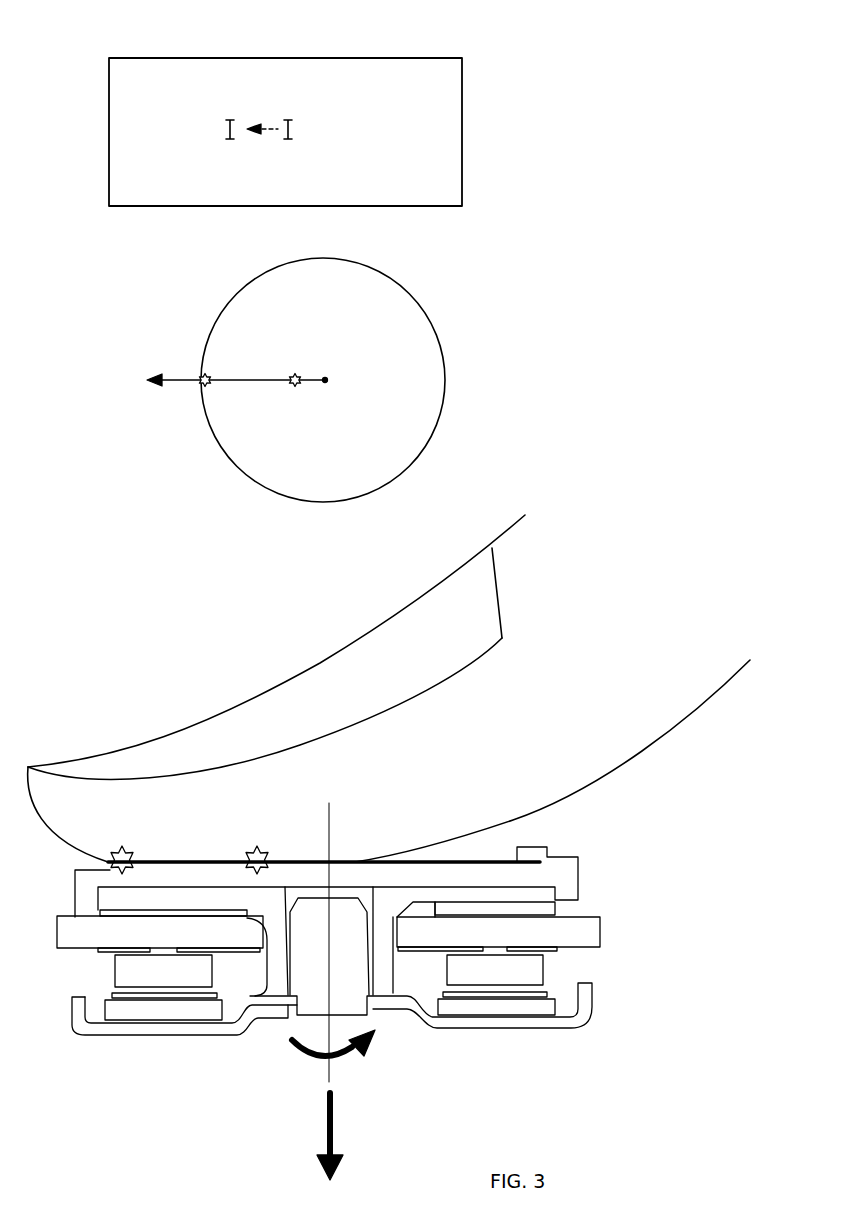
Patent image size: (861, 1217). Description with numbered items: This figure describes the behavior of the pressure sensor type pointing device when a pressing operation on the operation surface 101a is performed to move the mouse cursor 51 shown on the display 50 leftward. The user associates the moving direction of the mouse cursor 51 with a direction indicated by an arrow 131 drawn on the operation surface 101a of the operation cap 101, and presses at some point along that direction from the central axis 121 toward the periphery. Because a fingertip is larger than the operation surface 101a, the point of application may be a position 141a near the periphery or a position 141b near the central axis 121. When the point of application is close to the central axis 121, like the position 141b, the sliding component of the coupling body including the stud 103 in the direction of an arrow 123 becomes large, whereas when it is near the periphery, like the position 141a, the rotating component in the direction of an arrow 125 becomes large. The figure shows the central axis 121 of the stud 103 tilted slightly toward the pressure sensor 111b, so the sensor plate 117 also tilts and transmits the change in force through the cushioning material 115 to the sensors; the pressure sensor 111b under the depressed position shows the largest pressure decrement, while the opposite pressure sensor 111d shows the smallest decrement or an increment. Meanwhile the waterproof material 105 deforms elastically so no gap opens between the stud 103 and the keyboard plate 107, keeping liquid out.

The display 50 is at (462, 58).
The mouse cursor 51 is at (294, 122).
The operation cap 101 is at (203, 861).
The operation surface 101a is at (415, 335).
The stud 103 is at (175, 888).
The waterproof material 105 is at (195, 912).
The keyboard plate 107 is at (262, 911).
The pressure sensor 111b is at (160, 958).
The pressure sensor 111d is at (487, 962).
The cushioning material 115 is at (237, 992).
The sensor plate 117 is at (97, 979).
The central axis 121 is at (328, 384).
The arrow 123 is at (337, 1137).
The arrow 125 is at (376, 1043).
The arrow 131 is at (265, 378).
The position 141a is at (208, 374).
The position 141b is at (297, 374).